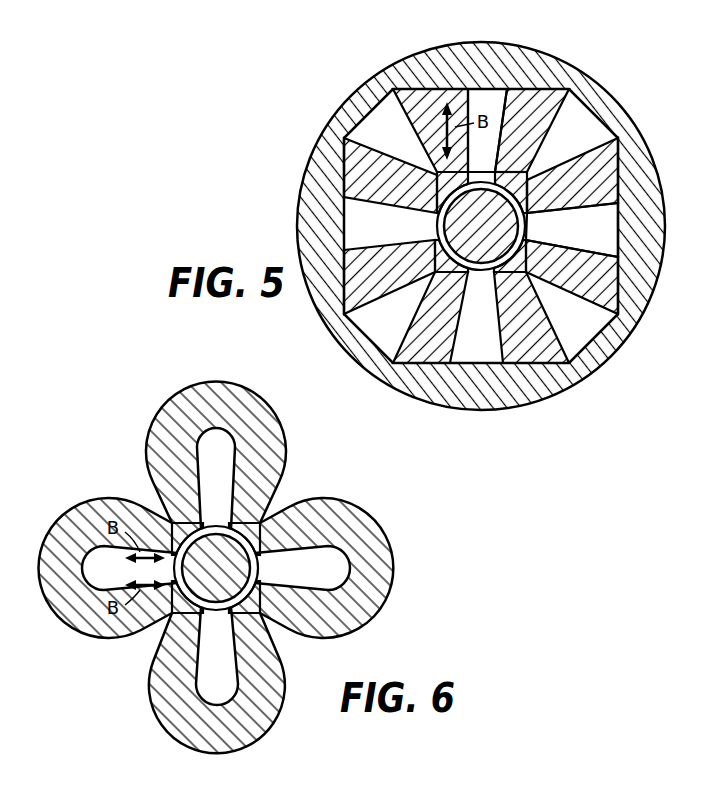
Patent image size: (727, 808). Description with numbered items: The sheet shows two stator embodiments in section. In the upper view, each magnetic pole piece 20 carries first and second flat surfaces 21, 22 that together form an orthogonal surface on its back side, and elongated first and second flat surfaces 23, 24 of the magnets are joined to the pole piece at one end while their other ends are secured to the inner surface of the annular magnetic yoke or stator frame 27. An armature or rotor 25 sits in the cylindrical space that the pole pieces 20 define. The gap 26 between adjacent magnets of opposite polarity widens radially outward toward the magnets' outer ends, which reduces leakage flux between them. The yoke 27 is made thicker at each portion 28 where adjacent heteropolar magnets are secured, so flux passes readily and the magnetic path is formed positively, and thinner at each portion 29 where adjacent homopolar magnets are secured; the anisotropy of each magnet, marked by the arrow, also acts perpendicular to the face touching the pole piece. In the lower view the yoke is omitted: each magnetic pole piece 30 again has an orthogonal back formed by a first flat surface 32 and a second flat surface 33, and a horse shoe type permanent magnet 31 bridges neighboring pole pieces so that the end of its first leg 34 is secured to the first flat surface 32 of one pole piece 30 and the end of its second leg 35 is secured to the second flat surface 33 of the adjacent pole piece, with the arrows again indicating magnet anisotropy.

In FIG. 5, the magnetic pole piece 20 is at (440, 177).
In FIG. 5, the first flat surface 21 is at (532, 172).
In FIG. 5, the second flat surface 22 is at (535, 212).
In FIG. 5, the elongated first flat surface 23 is at (552, 92).
In FIG. 5, the elongated second flat surface 24 is at (605, 157).
In FIG. 5, the armature or rotor 25 is at (470, 233).
In FIG. 5, the gap 26 is at (488, 93).
In FIG. 5, the annular magnetic yoke or stator frame 27 is at (325, 152).
In FIG. 5, the thickened yoke portion 28 is at (640, 195).
In FIG. 5, the thinned yoke portion 29 is at (607, 100).
In FIG. 6, the magnetic pole piece 30 is at (257, 520).
In FIG. 6, the horse shoe type permanent magnet 31 is at (386, 568).
In FIG. 6, the first flat surface 32 is at (160, 490).
In FIG. 6, the second flat surface 33 is at (110, 499).
In FIG. 6, the first leg 34 is at (173, 461).
In FIG. 6, the second leg 35 is at (262, 470).